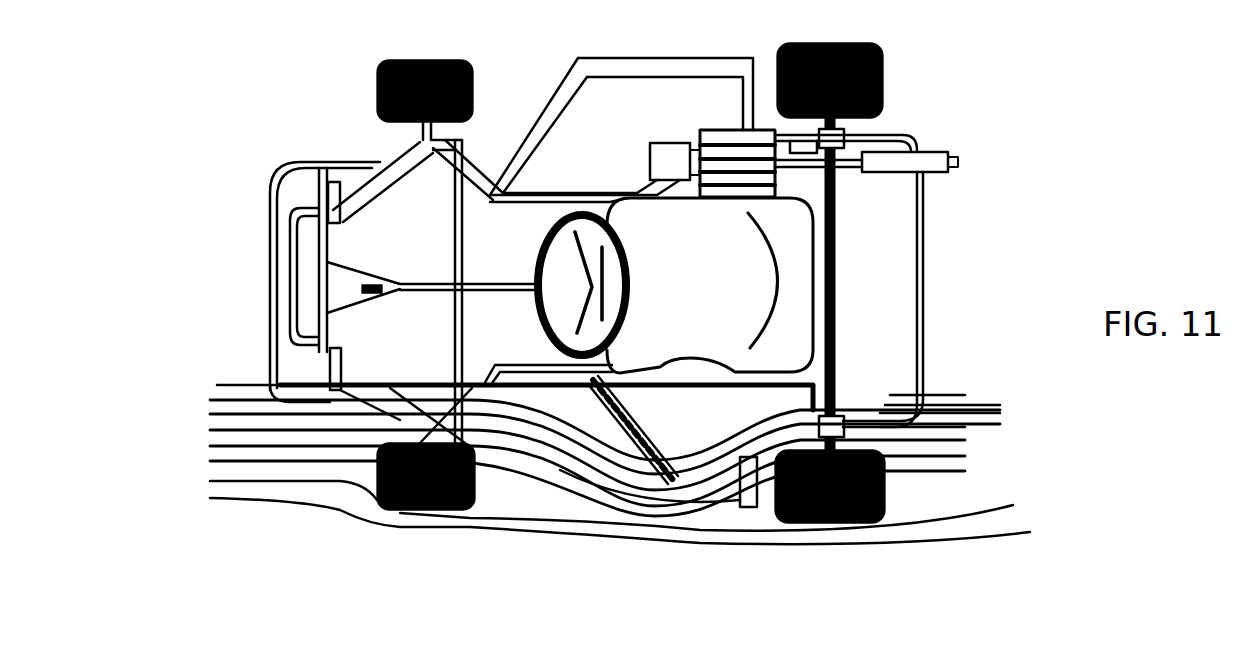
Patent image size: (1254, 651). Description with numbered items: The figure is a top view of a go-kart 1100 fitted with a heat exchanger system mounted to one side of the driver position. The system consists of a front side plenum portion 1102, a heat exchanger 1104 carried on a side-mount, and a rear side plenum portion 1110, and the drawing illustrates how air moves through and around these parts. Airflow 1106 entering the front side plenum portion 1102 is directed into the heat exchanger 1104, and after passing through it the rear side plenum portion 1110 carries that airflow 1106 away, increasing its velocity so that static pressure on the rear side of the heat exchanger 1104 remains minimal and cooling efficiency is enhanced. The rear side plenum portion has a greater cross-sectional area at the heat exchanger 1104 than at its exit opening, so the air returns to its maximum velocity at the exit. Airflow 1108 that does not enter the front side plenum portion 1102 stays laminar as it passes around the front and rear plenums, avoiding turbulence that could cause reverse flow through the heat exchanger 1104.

The go-kart 1100 is at (1012, 105).
The front side plenum portion 1102 is at (533, 447).
The heat exchanger 1104 is at (636, 478).
The airflow 1106 is at (513, 417).
The airflow 1108 is at (702, 510).
The rear side plenum portion 1110 is at (702, 380).